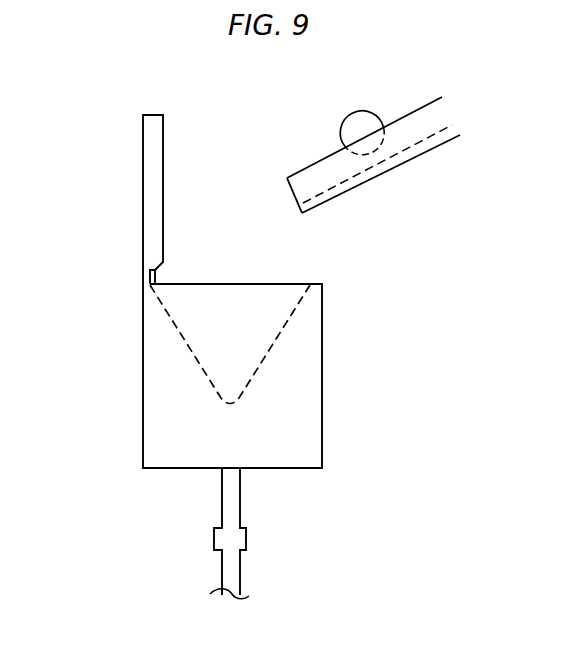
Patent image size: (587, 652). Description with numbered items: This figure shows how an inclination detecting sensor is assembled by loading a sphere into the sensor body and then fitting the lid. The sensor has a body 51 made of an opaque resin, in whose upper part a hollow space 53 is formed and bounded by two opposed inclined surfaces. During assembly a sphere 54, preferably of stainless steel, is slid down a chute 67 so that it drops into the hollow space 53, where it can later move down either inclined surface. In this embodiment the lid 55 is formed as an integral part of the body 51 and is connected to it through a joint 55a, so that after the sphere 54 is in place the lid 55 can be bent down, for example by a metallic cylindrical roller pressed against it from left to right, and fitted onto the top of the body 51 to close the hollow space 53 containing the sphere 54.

The body 51 is at (307, 420).
The hollow space 53 is at (255, 337).
The sphere 54 is at (362, 130).
The lid 55 is at (150, 213).
The joint 55a is at (145, 278).
The chute 67 is at (393, 165).